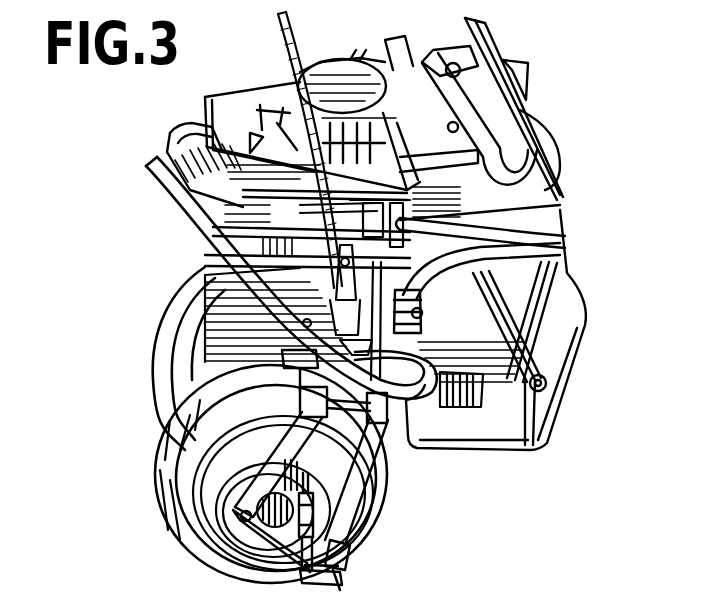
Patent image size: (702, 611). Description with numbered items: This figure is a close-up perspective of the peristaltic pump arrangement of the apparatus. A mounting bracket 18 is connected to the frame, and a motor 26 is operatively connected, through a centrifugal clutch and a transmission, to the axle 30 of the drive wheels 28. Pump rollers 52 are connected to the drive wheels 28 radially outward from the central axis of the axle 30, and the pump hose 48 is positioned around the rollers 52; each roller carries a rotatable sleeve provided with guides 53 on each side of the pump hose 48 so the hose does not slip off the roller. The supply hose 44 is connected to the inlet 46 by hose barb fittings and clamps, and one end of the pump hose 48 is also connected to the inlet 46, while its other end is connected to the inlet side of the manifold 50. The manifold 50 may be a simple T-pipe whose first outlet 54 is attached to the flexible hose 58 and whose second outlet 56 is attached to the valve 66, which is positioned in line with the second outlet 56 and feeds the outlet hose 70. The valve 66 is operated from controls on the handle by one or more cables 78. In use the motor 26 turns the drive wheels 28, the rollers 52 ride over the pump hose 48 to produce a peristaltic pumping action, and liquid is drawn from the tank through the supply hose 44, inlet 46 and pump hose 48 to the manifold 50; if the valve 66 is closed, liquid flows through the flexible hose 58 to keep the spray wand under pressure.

The mounting bracket 18 is at (548, 426).
The motor 26 is at (245, 81).
The drive wheels 28 is at (398, 517).
The axle 30 is at (270, 425).
The supply hose 44 is at (468, 288).
The inlet 46 is at (428, 315).
The pump hose 48 is at (403, 460).
The manifold 50 is at (298, 362).
The pump rollers 52 is at (352, 578).
The guides 53 is at (356, 534).
The first outlet 54 is at (456, 404).
The second outlet 56 is at (227, 263).
The flexible hose 58 is at (165, 218).
The valve 66 is at (316, 240).
The outlet hose 70 is at (560, 212).
The cables 78 is at (290, 60).